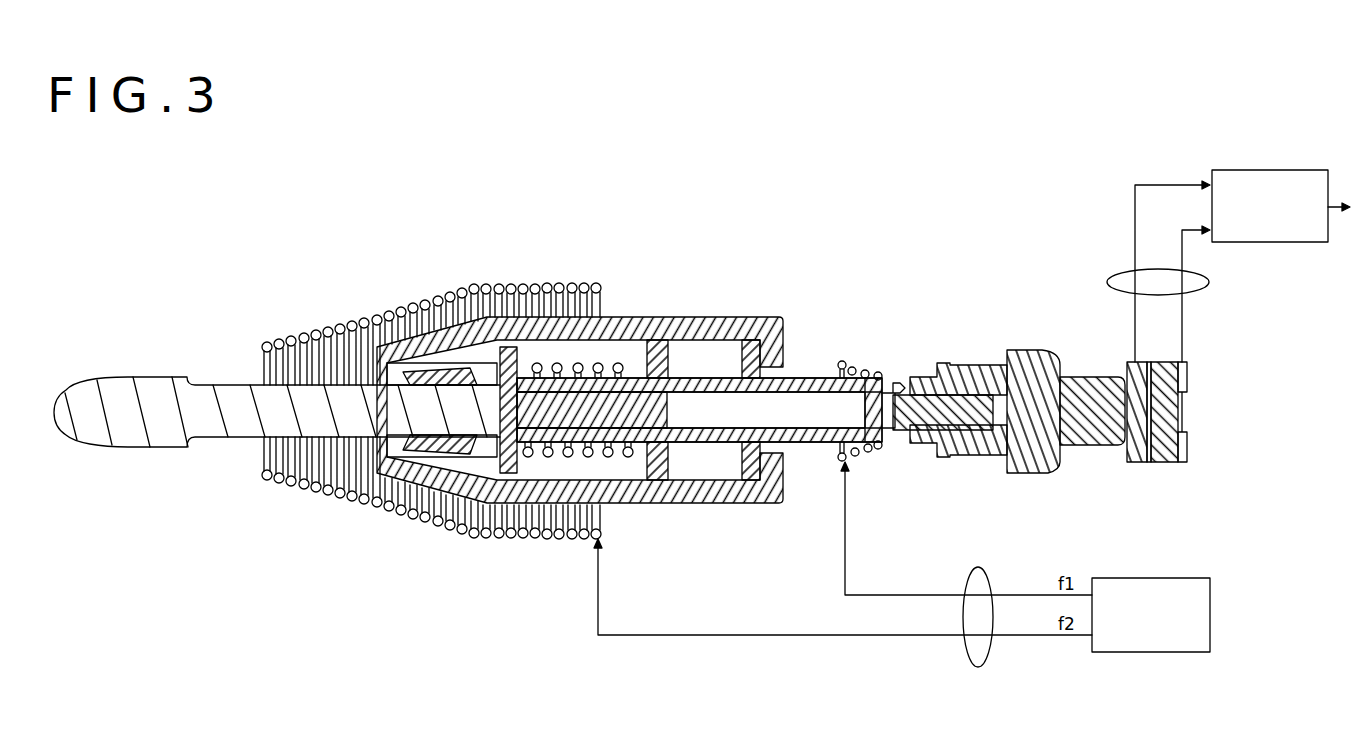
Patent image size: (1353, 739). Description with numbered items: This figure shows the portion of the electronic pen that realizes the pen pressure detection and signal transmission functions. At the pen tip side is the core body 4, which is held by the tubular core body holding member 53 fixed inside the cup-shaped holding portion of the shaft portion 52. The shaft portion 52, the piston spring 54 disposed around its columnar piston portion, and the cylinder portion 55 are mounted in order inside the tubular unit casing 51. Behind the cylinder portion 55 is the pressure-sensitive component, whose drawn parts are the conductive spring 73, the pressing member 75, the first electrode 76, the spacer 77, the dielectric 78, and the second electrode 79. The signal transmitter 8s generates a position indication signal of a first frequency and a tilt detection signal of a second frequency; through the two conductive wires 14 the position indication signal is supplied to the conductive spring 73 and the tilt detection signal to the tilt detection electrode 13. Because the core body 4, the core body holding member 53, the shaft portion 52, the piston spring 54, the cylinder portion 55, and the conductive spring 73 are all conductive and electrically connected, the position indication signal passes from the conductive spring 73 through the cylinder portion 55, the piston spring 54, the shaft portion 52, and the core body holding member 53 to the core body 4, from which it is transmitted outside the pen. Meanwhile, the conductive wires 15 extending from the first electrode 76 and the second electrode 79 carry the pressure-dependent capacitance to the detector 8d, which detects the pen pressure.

The core body 4 is at (148, 369).
The tilt detection electrode 13 is at (440, 518).
The conductive wires 14 is at (980, 567).
The conductive wires 15 is at (1212, 283).
The unit casing 51 is at (683, 317).
The shaft portion 52 is at (607, 403).
The core body holding member 53 is at (420, 338).
The piston spring 54 is at (608, 450).
The cylinder portion 55 is at (813, 378).
The conductive spring 73 is at (851, 362).
The pressing member 75 is at (1035, 388).
The first electrode 76 is at (1127, 453).
The spacer 77 is at (1148, 462).
The dielectric 78 is at (1165, 462).
The second electrode 79 is at (1187, 452).
The detector 8d is at (1232, 168).
The signal transmitter 8s is at (1113, 576).